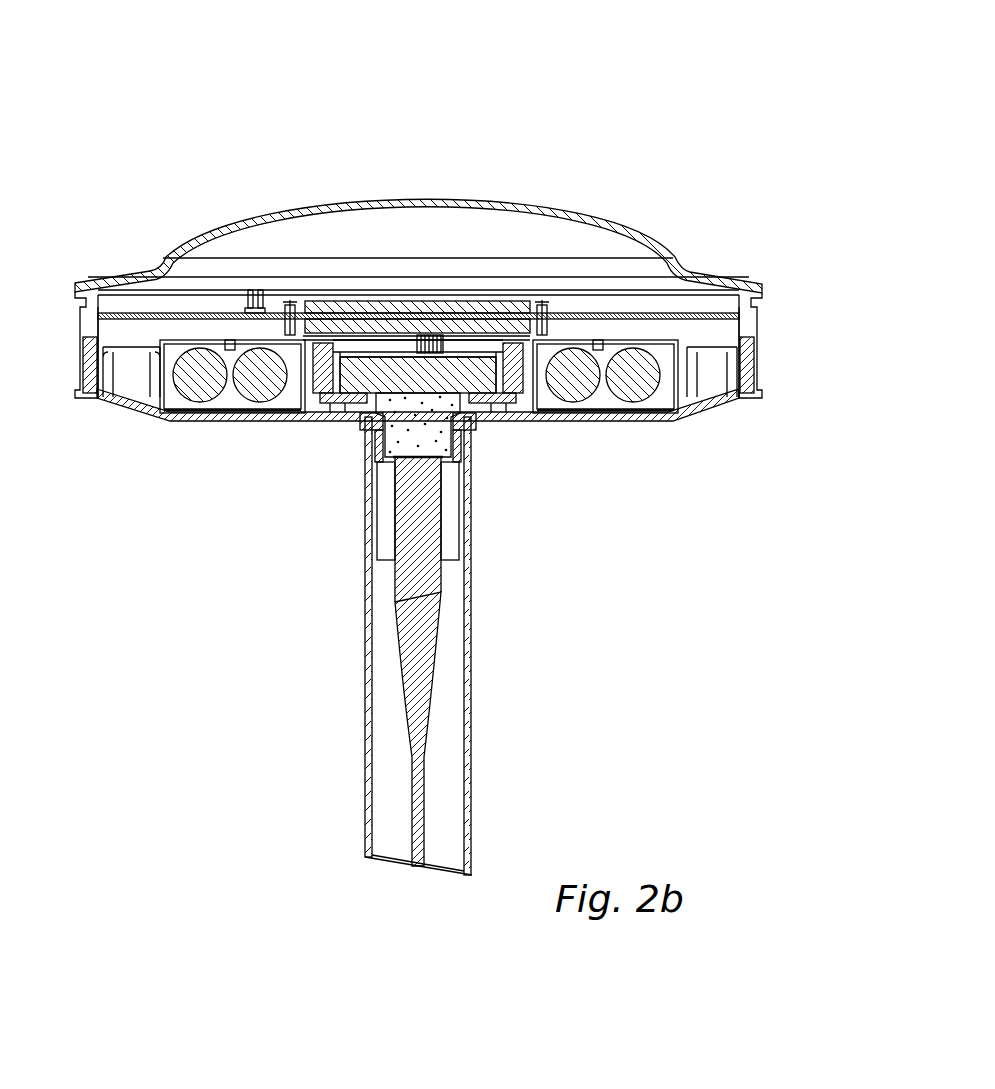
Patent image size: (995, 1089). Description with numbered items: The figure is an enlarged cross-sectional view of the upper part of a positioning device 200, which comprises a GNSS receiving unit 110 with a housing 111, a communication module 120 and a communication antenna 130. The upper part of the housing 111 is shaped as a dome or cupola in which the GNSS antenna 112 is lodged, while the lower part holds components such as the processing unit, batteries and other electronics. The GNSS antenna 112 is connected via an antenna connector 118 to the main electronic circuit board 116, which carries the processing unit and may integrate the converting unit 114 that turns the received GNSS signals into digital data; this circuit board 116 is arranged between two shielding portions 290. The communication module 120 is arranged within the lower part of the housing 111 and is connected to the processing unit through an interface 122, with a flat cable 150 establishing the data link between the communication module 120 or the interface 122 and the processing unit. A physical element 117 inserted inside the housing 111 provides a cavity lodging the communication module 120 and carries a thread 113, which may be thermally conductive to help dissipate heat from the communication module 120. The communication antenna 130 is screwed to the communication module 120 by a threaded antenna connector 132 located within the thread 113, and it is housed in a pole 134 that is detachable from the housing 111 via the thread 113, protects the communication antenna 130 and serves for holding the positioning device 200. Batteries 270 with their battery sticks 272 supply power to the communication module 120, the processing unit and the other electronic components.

The positioning device 200 is at (250, 100).
The GNSS antenna 112 is at (540, 228).
The GNSS receiving unit 110 is at (416, 300).
The antenna connector 118 is at (250, 306).
The converting unit 114 is at (418, 239).
The main electronic circuit board 116 is at (583, 312).
The shielding portions 290 is at (456, 300).
The housing 111 is at (133, 412).
The batteries 270 is at (457, 422).
The battery sticks 272 is at (630, 398).
The flat cable 150 is at (418, 440).
The physical element 117 is at (520, 402).
The interface 122 is at (488, 412).
The communication module 120 is at (362, 428).
The pole 134 is at (470, 735).
The thread 113 is at (360, 462).
The threaded antenna connector 132 is at (420, 460).
The communication antenna 130 is at (425, 606).